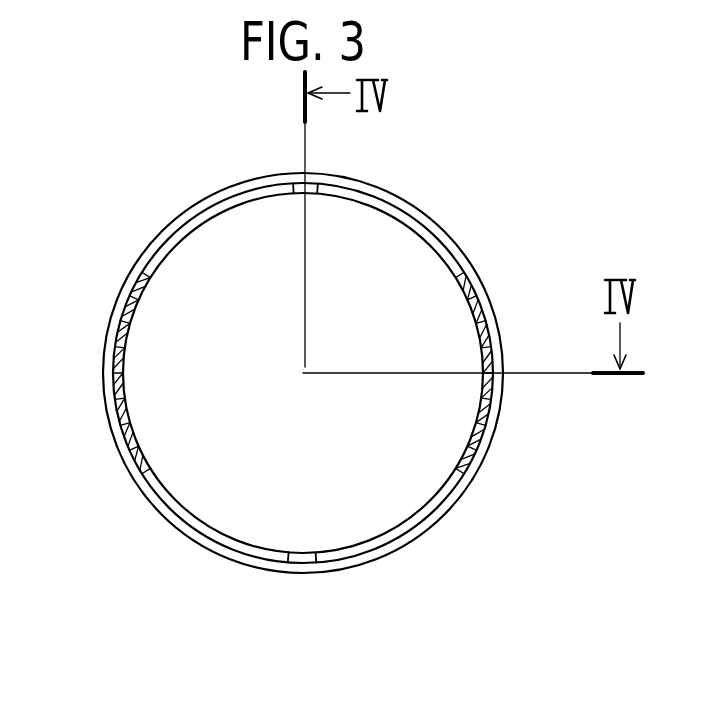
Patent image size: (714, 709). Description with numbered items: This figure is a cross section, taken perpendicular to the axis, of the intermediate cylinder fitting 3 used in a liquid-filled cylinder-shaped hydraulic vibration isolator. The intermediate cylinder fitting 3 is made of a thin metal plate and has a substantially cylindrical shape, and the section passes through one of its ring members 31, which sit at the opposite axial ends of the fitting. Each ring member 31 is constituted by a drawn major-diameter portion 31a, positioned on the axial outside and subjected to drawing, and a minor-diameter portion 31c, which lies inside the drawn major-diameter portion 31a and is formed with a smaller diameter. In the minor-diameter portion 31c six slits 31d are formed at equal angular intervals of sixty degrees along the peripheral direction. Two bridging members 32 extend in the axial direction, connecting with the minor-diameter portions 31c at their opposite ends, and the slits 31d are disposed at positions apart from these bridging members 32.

The intermediate cylinder fitting 3 is at (426, 191).
The ring member 31 is at (203, 194).
The drawn major-diameter portion 31a is at (197, 541).
The minor-diameter portion 31c is at (211, 536).
The slit 31d is at (140, 280).
The bridging member 32 is at (120, 378).